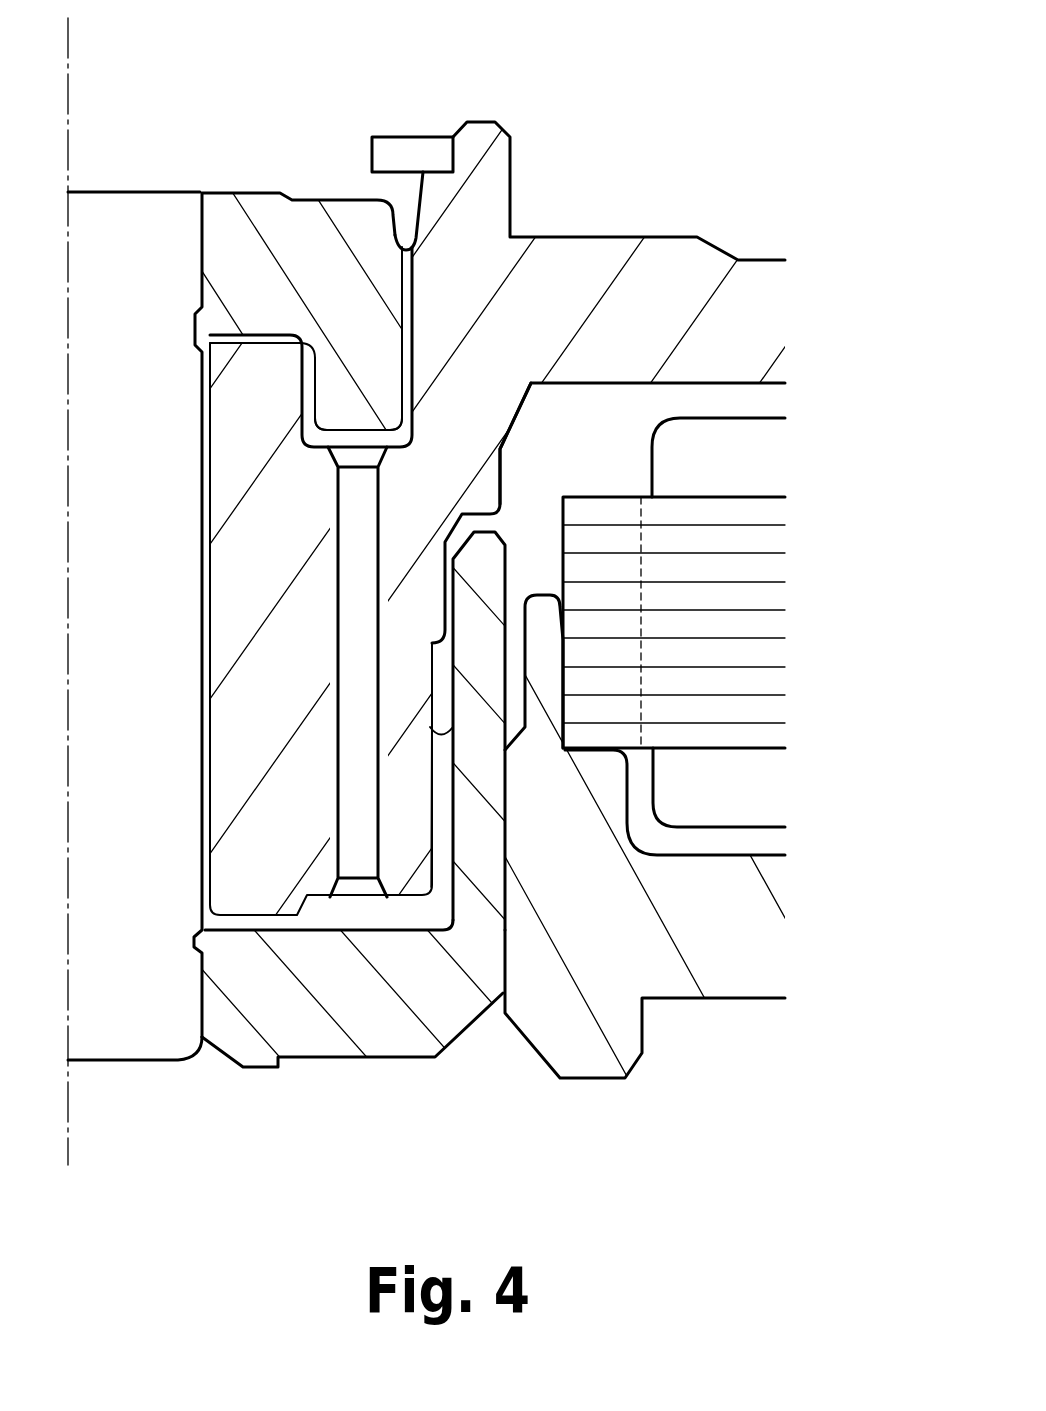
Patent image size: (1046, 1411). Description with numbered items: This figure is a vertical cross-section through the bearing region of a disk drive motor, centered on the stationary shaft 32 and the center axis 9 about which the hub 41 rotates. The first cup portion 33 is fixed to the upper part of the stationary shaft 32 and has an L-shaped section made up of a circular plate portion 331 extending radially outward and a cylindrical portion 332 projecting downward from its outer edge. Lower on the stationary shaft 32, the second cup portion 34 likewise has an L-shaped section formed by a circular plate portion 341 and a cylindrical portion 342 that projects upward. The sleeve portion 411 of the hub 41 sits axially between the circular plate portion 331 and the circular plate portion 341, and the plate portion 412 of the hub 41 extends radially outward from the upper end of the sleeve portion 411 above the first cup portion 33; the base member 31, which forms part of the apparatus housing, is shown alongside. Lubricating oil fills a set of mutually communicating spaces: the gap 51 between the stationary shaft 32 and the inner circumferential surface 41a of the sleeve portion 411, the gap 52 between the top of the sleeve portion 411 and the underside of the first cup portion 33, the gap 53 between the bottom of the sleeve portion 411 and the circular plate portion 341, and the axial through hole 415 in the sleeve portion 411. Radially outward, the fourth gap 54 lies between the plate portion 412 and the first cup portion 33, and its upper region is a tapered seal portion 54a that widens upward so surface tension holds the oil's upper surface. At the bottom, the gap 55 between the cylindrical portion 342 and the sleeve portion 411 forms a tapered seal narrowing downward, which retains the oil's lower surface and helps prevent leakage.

The center axis 9 is at (68, 78).
The stationary shaft 32 is at (132, 217).
The hub 41 is at (751, 151).
The inner circumferential surface 41a is at (203, 847).
The sleeve portion 411 is at (275, 833).
The plate portion 412 is at (673, 283).
The through hole 415 is at (545, 445).
The gap 51 is at (218, 441).
The first cup portion 33 is at (430, 62).
The circular plate portion 331 is at (268, 280).
The cylindrical portion 332 is at (362, 375).
The fourth gap 54 is at (419, 250).
The tapered seal portion 54a is at (419, 327).
The gap 52 is at (374, 521).
The gap 55 is at (452, 802).
The gap 53 is at (348, 931).
The second cup portion 34 is at (535, 1140).
The circular plate portion 341 is at (405, 1013).
The cylindrical portion 342 is at (480, 840).
The base member 31 is at (732, 980).